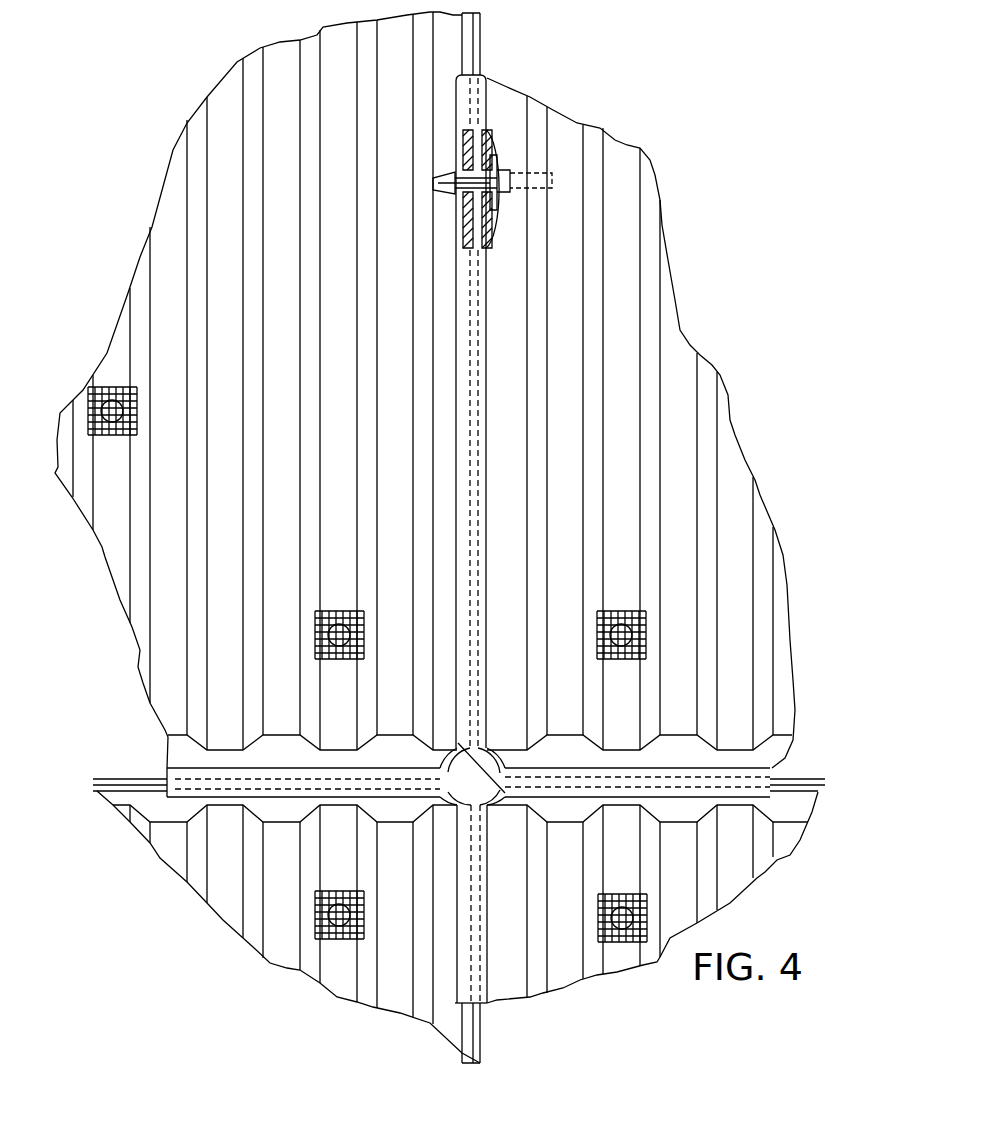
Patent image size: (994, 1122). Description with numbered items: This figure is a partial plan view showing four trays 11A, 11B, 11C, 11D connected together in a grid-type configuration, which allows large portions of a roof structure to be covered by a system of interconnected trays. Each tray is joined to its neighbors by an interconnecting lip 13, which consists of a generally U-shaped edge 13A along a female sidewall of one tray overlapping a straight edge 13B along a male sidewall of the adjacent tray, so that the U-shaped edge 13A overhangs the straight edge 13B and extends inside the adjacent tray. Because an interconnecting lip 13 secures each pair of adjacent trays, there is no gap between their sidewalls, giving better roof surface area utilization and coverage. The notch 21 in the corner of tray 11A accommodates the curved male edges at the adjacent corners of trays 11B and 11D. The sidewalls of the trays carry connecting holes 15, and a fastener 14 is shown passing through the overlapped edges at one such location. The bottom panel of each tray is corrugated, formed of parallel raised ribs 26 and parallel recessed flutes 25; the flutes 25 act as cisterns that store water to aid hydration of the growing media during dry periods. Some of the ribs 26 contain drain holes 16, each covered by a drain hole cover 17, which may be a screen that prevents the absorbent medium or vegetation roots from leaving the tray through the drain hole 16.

The tray 11A is at (699, 312).
The tray 11B is at (620, 977).
The tray 11C is at (228, 934).
The tray 11D is at (153, 126).
The interconnecting lip 13 is at (454, 388).
The U-shaped edge 13A is at (482, 96).
The straight edge 13B is at (480, 44).
The fastener bolt 14 is at (514, 162).
The connecting hole 15 is at (453, 174).
The drain hole 16 is at (116, 425).
The drain hole cover 17 is at (120, 385).
The notch 21 is at (495, 766).
The recessed flute 25 is at (167, 633).
The raised rib 26 is at (225, 700).